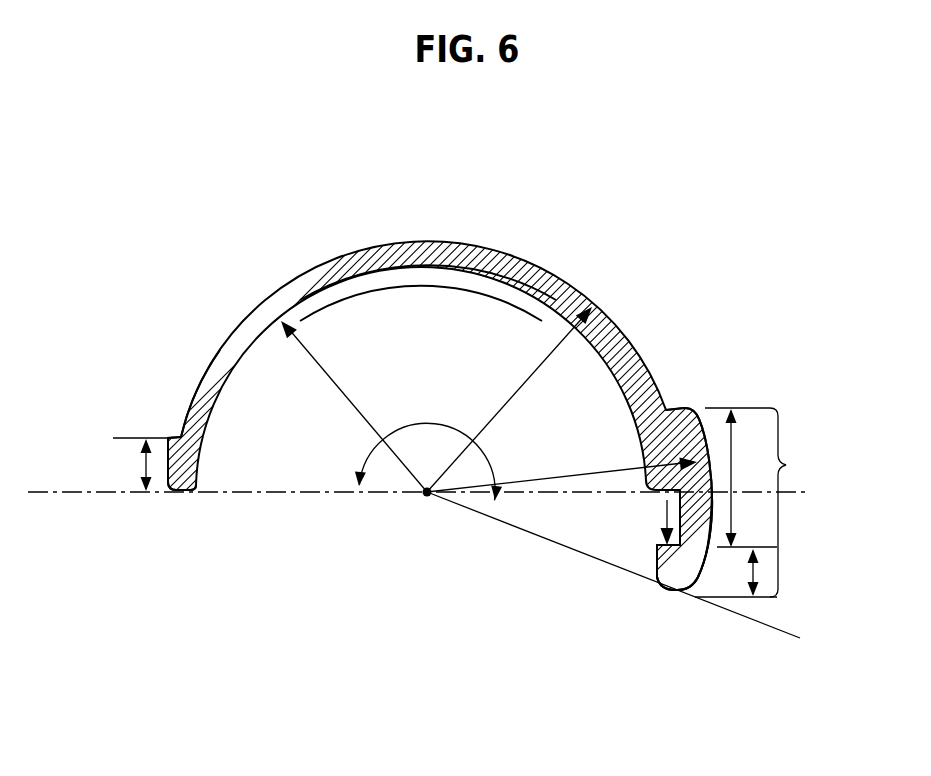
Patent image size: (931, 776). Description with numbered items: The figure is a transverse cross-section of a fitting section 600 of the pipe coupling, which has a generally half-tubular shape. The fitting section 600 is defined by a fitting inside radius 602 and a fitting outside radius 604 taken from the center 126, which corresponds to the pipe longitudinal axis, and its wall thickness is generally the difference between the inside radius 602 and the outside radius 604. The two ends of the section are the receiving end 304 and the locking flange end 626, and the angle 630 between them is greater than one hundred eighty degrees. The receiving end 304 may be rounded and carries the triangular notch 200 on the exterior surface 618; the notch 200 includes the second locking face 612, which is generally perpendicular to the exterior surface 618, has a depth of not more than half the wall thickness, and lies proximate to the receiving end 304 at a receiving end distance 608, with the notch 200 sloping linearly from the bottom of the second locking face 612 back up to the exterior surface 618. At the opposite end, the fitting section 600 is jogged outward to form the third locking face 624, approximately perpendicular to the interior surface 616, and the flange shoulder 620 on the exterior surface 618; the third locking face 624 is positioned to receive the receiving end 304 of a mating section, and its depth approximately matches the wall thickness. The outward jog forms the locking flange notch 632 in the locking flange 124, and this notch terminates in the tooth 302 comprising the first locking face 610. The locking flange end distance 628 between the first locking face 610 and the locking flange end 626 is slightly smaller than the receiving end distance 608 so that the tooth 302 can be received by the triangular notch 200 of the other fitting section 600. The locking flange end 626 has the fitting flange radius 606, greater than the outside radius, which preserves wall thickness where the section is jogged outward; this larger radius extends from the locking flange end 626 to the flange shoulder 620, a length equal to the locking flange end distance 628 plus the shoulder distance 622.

The fitting section 600 is at (486, 214).
The fitting inside radius 602 is at (338, 387).
The fitting outside radius 604 is at (578, 300).
The fitting flange radius 606 is at (595, 470).
The receiving end distance 608 is at (140, 463).
The first locking face 610 is at (667, 520).
The second locking face 612 is at (172, 430).
The interior surface 616 is at (391, 290).
The exterior surface 618 is at (408, 228).
The flange shoulder 620 is at (686, 407).
The shoulder distance 622 is at (786, 463).
The third locking face 624 is at (652, 505).
The locking flange end 626 is at (677, 592).
The locking flange end distance 628 is at (767, 568).
The angle 630 is at (418, 425).
The locking flange notch 632 is at (690, 598).
The locking flange 124 is at (708, 430).
The center 126 is at (425, 497).
The triangular notch 200 is at (183, 405).
The tooth 302 is at (657, 550).
The receiving end 304 is at (182, 493).